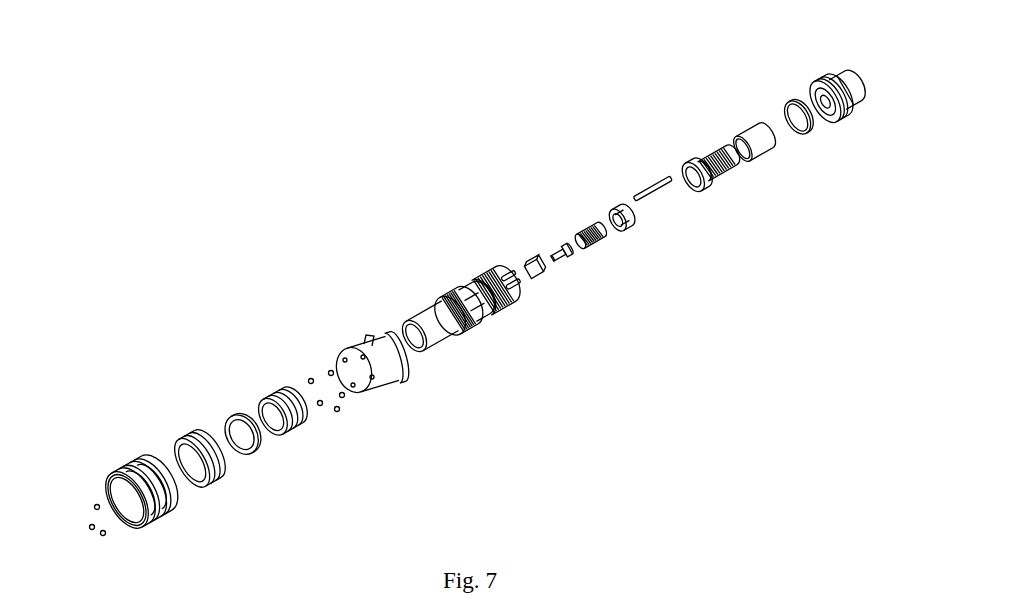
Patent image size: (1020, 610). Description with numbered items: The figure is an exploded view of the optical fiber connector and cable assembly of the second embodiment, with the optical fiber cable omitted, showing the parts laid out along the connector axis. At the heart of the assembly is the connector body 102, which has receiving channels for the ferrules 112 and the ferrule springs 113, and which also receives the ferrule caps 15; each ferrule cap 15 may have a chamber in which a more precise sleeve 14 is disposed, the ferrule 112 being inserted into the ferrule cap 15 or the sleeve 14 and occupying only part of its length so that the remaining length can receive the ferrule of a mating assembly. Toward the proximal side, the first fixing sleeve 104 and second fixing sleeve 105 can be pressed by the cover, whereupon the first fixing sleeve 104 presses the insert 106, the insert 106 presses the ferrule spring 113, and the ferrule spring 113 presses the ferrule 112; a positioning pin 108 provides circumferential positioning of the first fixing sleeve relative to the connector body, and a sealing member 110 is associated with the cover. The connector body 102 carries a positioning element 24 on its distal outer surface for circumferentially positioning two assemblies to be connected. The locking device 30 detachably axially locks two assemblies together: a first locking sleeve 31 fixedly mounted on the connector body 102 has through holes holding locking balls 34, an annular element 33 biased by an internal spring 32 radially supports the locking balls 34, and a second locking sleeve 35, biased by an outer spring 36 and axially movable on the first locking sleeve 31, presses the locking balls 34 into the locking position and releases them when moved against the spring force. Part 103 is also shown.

The positioning element 24 is at (95, 507).
The second locking sleeve 35 is at (140, 460).
The outer spring 36 is at (187, 437).
The annular element 33 is at (235, 417).
The internal spring 32 is at (277, 393).
The locking balls 34 is at (315, 367).
The first locking sleeve 31 is at (370, 347).
The connector body 102 is at (453, 290).
The ferrule cap 15 is at (503, 285).
The sleeve 14 is at (524, 262).
The ferrule 112 is at (557, 250).
The ferrule spring 113 is at (594, 225).
The insert 106 is at (623, 227).
The positioning pin 108 is at (653, 195).
The first fixing sleeve 104 is at (702, 180).
The second fixing sleeve 105 is at (756, 148).
The sealing member 110 is at (799, 133).
The cap 103 is at (844, 98).
The locking device 30 is at (365, 441).